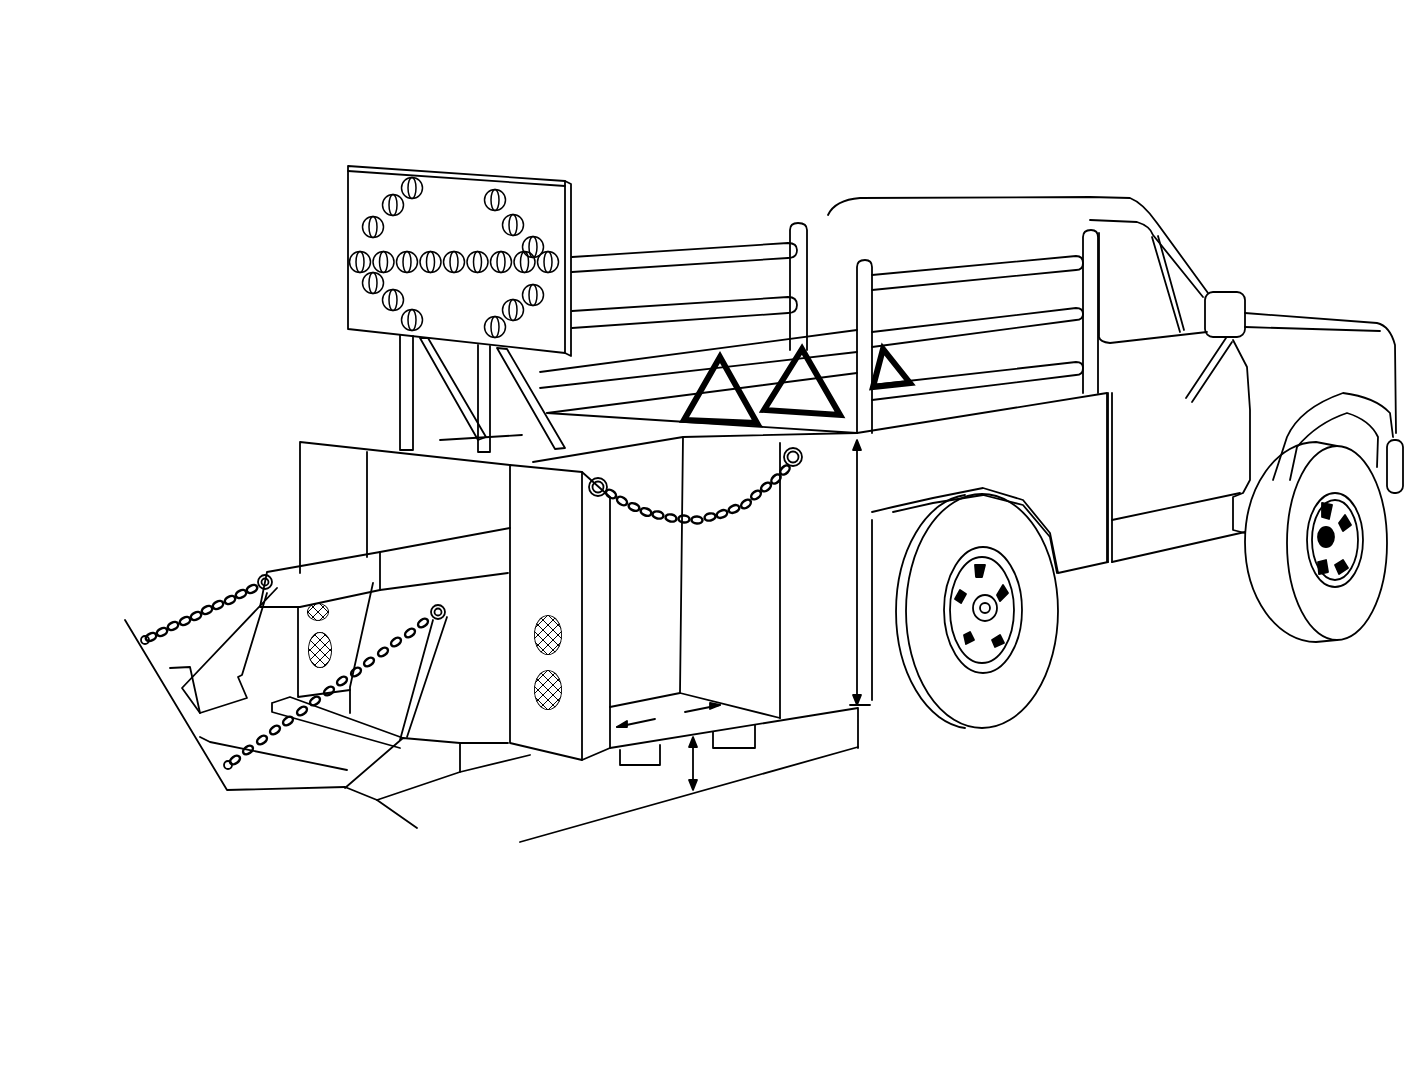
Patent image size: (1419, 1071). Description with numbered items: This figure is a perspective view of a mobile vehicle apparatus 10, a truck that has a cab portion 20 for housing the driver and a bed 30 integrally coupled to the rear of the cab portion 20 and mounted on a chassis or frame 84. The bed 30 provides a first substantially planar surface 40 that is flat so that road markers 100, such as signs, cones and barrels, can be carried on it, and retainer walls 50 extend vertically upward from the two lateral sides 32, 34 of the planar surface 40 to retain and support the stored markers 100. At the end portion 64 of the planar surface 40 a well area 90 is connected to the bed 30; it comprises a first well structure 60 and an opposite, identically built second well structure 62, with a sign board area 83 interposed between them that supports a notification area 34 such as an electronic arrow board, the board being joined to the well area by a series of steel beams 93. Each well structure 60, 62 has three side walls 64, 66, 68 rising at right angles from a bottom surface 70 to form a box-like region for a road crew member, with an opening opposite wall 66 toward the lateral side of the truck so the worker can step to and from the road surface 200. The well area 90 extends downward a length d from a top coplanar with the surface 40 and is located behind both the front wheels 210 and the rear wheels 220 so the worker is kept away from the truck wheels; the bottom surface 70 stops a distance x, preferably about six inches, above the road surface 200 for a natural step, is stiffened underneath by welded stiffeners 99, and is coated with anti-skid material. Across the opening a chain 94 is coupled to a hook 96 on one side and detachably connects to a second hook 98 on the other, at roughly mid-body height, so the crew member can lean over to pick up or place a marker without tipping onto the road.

The mobile vehicle apparatus 10 is at (789, 97).
The cab portion 20 is at (764, 456).
The bed 30 is at (765, 274).
The side 32 is at (668, 393).
The side / notification area 34 is at (707, 360).
The first substantially planar surface 40 is at (978, 405).
The retainer walls 50 is at (963, 277).
The first well structure 60 is at (539, 653).
The second well structure 62 is at (380, 428).
The side wall / end portion 64 is at (749, 580).
The side wall 66 is at (591, 612).
The side wall 68 is at (610, 640).
The bottom surface 70 is at (643, 763).
The sign board area 83 is at (363, 350).
The chassis or frame 84 is at (986, 628).
The well area 90 is at (536, 775).
The steel beams 93 is at (407, 396).
The chain 94 is at (711, 521).
The hook 96 is at (610, 482).
The second hook 98 is at (800, 463).
The stiffeners 99 is at (730, 750).
The markers 100 is at (755, 388).
The road surface 200 is at (788, 456).
The front wheels 210 is at (1288, 620).
The rear wheels 220 is at (1005, 705).